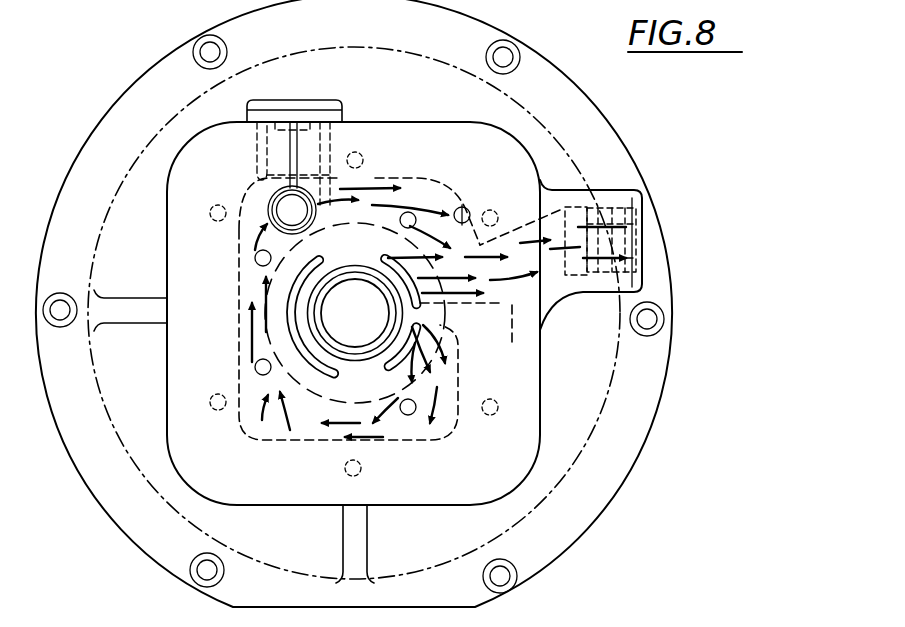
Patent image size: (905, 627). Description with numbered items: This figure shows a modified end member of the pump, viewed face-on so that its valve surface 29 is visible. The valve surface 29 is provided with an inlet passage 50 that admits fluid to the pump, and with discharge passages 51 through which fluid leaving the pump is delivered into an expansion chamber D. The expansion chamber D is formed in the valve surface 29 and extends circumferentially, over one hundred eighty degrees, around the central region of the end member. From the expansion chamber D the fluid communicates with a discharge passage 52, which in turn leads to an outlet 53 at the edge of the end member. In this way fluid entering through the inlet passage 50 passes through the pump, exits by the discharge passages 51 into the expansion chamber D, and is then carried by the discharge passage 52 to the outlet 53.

The valve surface 29 is at (262, 494).
The inlet passage 50 is at (330, 372).
The discharge passages 51 is at (384, 258).
The discharge passage 52 is at (506, 292).
The outlet 53 is at (650, 220).
The expansion chamber D is at (412, 442).